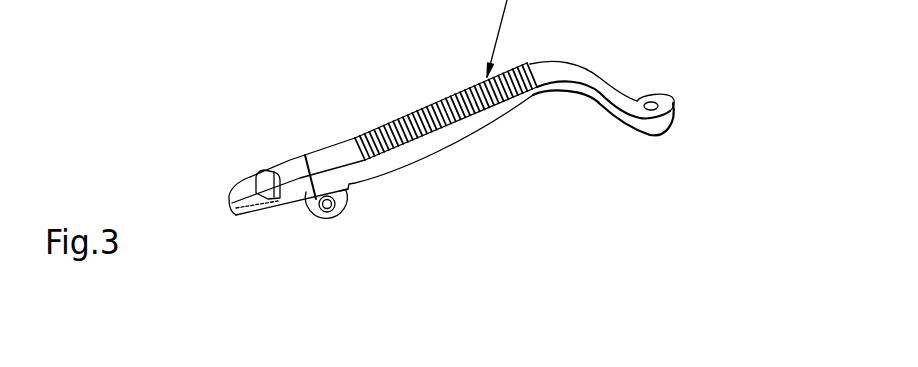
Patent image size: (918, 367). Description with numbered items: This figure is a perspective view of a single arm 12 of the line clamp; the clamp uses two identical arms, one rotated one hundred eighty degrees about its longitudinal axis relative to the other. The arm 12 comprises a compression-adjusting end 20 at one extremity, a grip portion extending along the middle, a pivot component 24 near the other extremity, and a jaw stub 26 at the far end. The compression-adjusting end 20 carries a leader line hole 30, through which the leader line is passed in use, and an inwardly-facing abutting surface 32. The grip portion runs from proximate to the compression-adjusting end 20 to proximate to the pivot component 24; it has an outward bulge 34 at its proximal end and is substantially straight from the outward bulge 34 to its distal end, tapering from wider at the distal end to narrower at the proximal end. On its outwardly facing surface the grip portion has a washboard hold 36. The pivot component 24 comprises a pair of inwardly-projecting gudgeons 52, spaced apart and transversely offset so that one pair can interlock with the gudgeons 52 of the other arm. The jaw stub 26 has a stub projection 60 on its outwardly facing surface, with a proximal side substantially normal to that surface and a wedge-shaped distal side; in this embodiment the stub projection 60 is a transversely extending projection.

The arm 12 is at (420, 85).
The compression-adjusting end 20 is at (675, 112).
The pivot component 24 is at (352, 217).
The jaw stub 26 is at (282, 178).
The leader line hole 30 is at (655, 103).
The inwardly-facing abutting surface 32 is at (637, 130).
The outward bulge 34 is at (550, 68).
The washboard hold 36 is at (442, 132).
The gudgeons 52 is at (322, 218).
The stub projection 60 is at (258, 182).